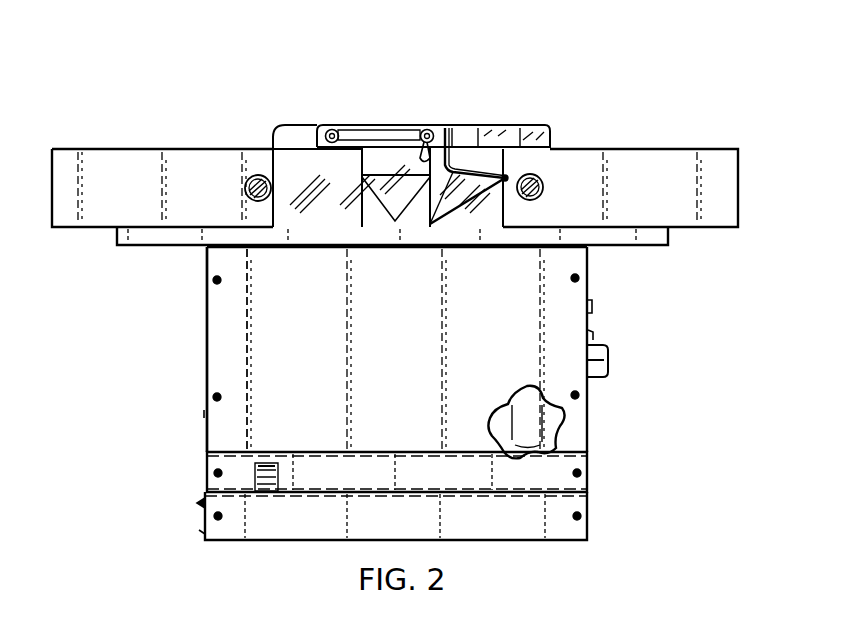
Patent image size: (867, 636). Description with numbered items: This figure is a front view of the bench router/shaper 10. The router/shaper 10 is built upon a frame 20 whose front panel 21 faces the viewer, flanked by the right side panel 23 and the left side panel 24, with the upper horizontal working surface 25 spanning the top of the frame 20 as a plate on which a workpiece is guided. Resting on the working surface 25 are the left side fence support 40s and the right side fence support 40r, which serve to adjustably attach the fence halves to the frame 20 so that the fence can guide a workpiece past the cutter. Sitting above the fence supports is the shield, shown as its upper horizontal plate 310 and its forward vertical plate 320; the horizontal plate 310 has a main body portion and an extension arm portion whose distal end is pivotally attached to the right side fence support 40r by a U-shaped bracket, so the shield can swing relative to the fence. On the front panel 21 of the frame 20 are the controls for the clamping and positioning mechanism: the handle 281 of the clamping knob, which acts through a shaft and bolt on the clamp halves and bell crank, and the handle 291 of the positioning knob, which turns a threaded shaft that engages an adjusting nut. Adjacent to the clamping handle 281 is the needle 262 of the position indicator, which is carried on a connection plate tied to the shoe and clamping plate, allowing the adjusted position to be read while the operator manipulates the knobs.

The router/shaper 10 is at (172, 99).
The frame 20 is at (266, 420).
The front panel 21 is at (220, 346).
The right side panel 23 is at (590, 505).
The left side panel 24 is at (207, 298).
The upper horizontal working surface 25 is at (660, 233).
The left side fence support 40s is at (105, 187).
The right side fence support 40r is at (650, 178).
The needle 262 is at (592, 331).
The handle 281 is at (610, 362).
The handle 291 is at (556, 423).
The upper horizontal plate 310 is at (402, 125).
The forward vertical plate 320 is at (290, 125).